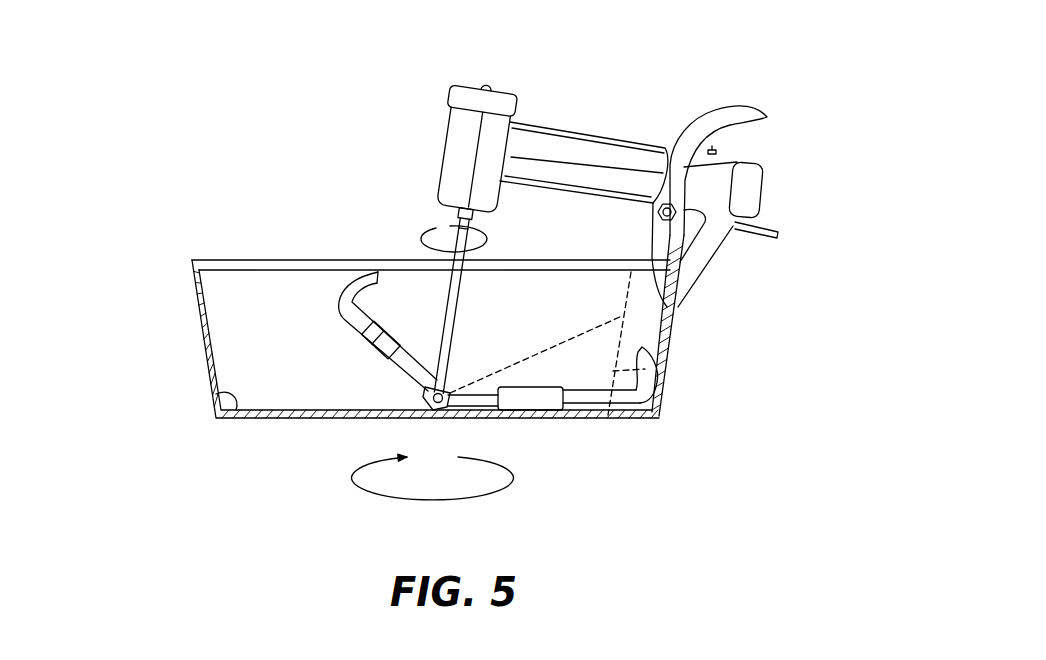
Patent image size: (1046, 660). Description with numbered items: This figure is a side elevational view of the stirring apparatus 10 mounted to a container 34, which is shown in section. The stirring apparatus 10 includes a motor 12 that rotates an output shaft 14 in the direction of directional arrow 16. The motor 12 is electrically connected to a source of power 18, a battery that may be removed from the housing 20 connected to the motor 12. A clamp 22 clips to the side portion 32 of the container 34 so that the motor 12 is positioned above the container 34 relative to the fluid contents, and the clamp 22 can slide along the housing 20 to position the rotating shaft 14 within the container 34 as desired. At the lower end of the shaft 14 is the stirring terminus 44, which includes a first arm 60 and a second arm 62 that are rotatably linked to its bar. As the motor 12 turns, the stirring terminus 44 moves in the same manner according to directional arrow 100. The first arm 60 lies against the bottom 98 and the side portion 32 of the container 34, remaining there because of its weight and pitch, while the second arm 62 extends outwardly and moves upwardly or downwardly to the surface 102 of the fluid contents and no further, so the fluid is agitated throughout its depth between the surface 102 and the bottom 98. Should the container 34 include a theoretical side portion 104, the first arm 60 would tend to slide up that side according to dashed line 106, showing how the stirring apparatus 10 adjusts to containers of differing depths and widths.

The stirring apparatus 10 is at (625, 125).
The motor 12 is at (433, 102).
The output shaft 14 is at (467, 214).
The directional arrow 16 is at (433, 226).
The source of power 18 is at (752, 187).
The housing 20 is at (527, 130).
The clamp 22 is at (730, 98).
The side portion 32 is at (678, 327).
The container 34 is at (190, 325).
The stirring terminus 44 is at (305, 252).
The first arm 60 is at (607, 430).
The second arm 62 is at (343, 347).
The bottom 98 is at (223, 392).
The directional arrow 100 is at (407, 502).
The surface 102 is at (225, 270).
The theoretical side portion 104 is at (663, 381).
The dashed line 106 is at (513, 392).